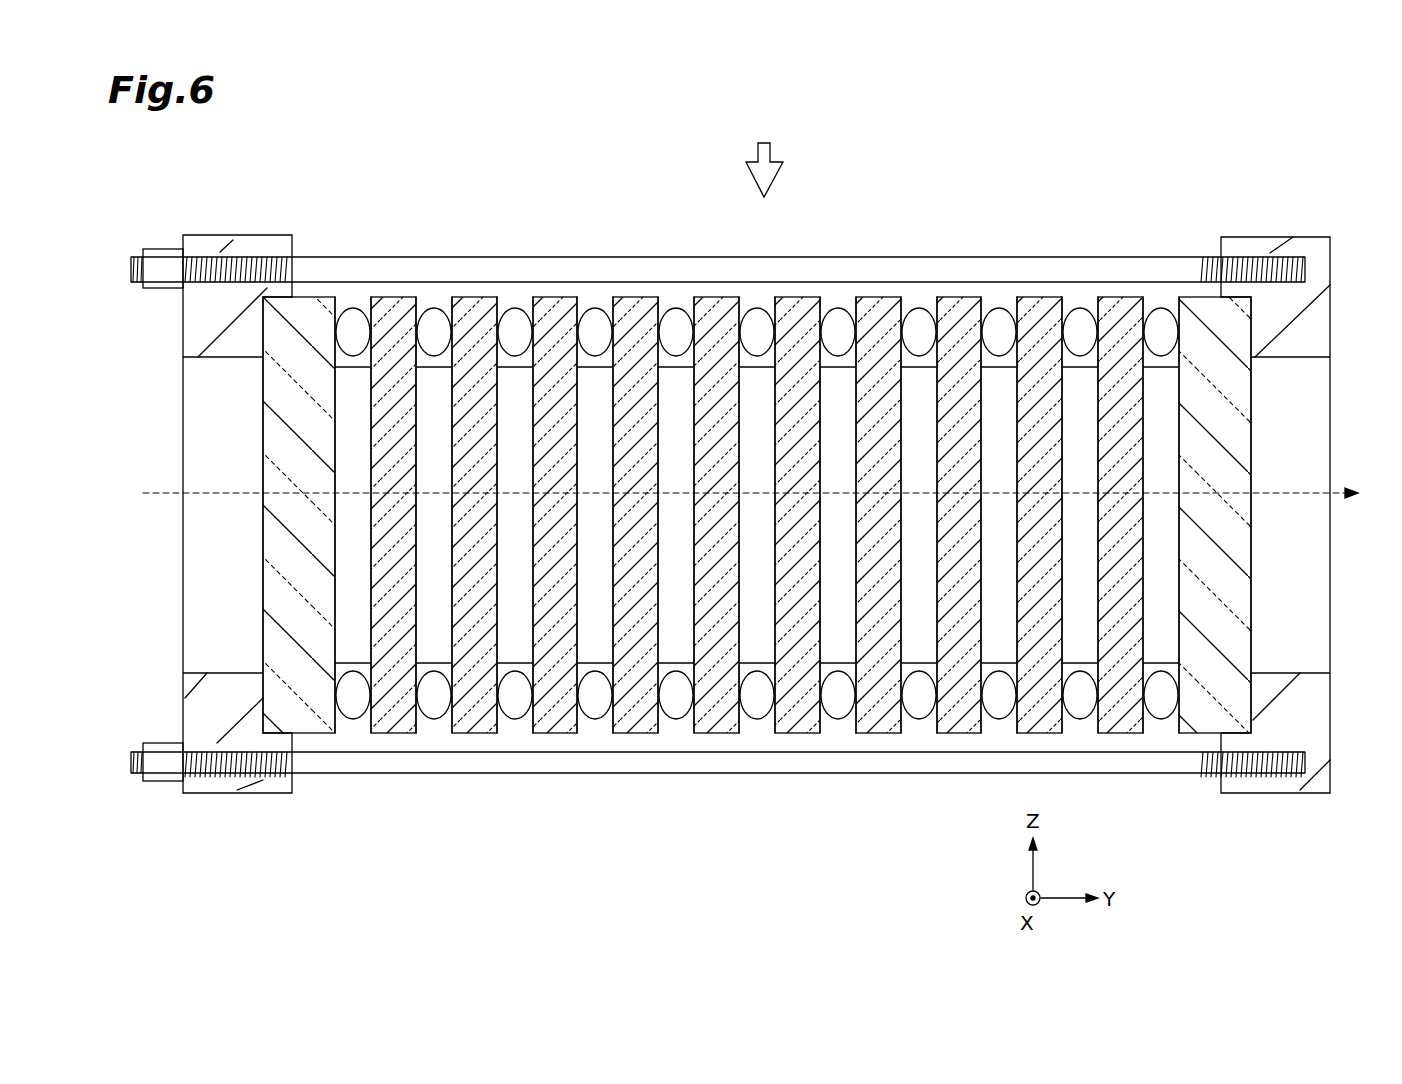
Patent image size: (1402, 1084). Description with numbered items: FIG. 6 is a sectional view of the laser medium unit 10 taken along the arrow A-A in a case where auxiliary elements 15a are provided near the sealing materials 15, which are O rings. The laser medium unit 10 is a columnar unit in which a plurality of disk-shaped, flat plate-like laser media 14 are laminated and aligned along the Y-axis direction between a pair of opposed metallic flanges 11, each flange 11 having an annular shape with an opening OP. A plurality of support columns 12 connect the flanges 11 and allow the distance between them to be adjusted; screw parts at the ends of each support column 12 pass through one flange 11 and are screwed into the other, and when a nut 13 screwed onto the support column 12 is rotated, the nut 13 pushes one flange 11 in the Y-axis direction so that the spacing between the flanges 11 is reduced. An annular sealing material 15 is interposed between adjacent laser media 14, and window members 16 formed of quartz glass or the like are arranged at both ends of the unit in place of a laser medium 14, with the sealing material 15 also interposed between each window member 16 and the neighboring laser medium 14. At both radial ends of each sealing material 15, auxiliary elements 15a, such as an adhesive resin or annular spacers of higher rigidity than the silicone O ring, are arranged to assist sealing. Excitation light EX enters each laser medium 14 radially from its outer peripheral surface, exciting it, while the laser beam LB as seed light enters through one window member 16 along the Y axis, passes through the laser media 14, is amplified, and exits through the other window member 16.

The laser medium unit 10 is at (955, 173).
The flange 11 is at (240, 780).
The support column 12 is at (640, 270).
The nut 13 is at (163, 263).
The laser medium 14 is at (637, 313).
The sealing material 15 is at (595, 707).
The auxiliary element 15a is at (602, 722).
The window member 16 is at (283, 307).
The laser beam LB is at (675, 493).
The excitation light EX is at (764, 155).
The opening OP is at (210, 587).